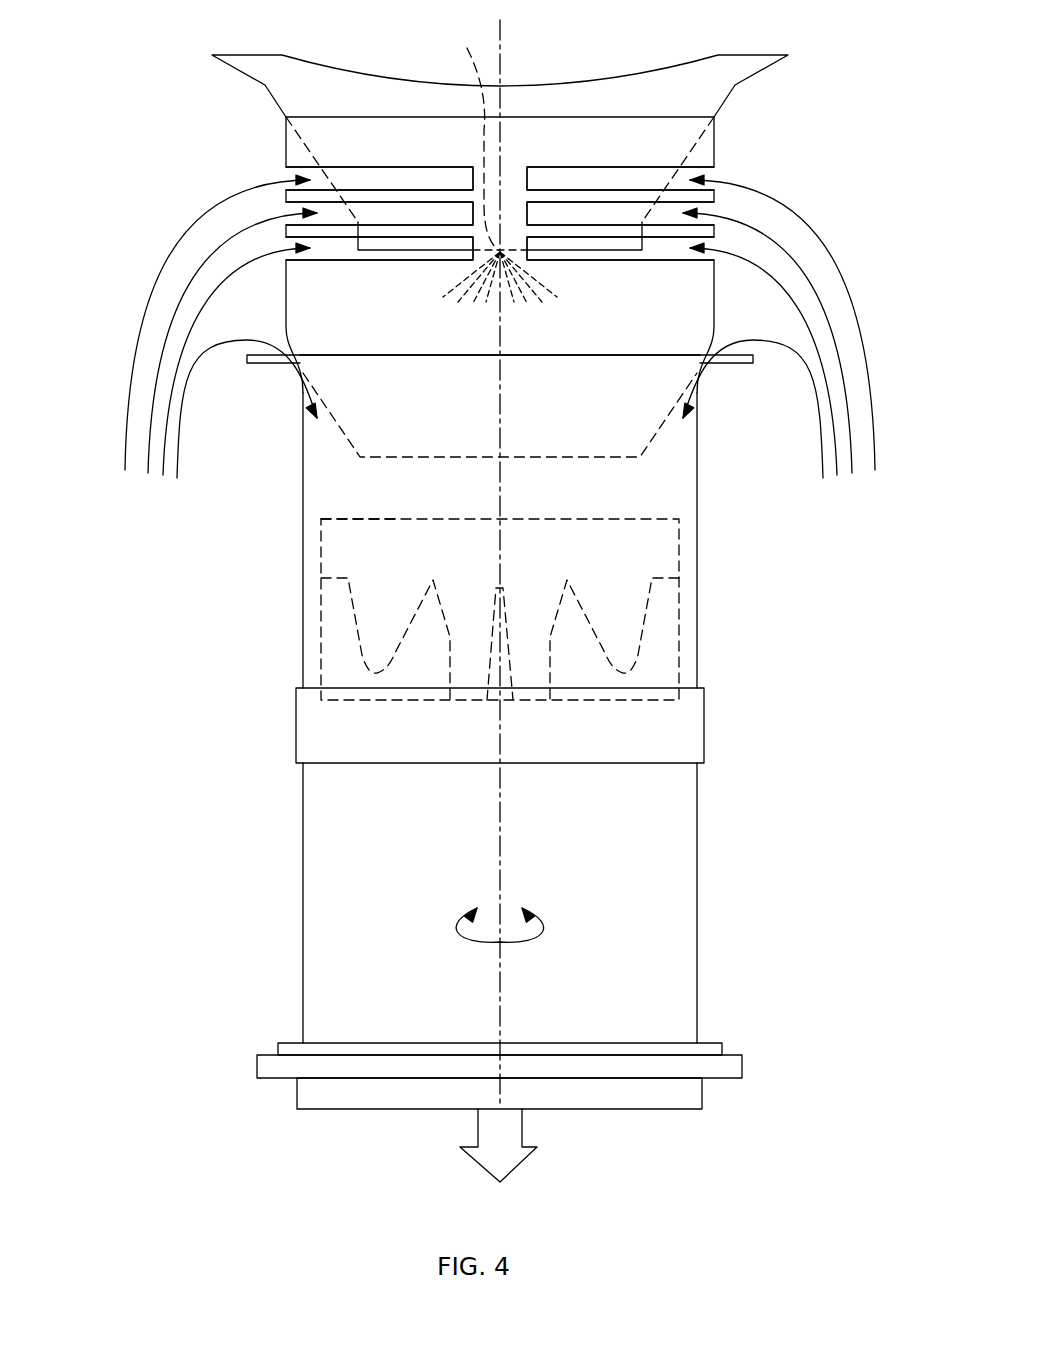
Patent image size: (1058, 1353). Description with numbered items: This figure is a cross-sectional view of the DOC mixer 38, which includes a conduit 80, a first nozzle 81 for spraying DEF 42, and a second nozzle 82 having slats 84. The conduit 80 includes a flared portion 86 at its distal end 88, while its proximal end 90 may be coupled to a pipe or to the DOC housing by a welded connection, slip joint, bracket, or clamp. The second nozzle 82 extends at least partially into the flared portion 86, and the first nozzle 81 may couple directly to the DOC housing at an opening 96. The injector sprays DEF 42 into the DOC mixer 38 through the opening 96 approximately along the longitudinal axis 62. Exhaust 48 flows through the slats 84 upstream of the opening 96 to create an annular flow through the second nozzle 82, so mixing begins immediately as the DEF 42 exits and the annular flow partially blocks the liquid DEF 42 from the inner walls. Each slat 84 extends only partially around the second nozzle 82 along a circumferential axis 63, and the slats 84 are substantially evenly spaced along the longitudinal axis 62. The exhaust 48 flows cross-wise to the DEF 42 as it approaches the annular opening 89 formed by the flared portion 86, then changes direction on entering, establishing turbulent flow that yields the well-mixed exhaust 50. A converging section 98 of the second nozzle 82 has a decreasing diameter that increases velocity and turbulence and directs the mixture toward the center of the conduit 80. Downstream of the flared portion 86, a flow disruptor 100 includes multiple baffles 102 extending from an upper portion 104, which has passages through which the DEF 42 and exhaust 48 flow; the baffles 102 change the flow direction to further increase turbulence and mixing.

The DOC mixer 38 is at (710, 497).
The DEF 42 is at (530, 298).
The exhaust 48 is at (132, 402).
The well-mixed exhaust 50 is at (516, 1157).
The longitudinal axis 62 is at (500, 848).
The circumferential axis 63 is at (527, 942).
The conduit 80 is at (697, 900).
The first nozzle 81 is at (763, 75).
The second nozzle 82 is at (292, 146).
The slats 84 is at (670, 216).
The flared portion 86 is at (424, 355).
The distal end 88 is at (365, 355).
The annular opening 89 is at (287, 375).
The proximal end 90 is at (702, 1093).
The opening 96 is at (479, 137).
The converging section 98 is at (525, 460).
The flow disruptor 100 is at (662, 552).
The baffles 102 is at (372, 645).
The upper portion 104 is at (372, 530).